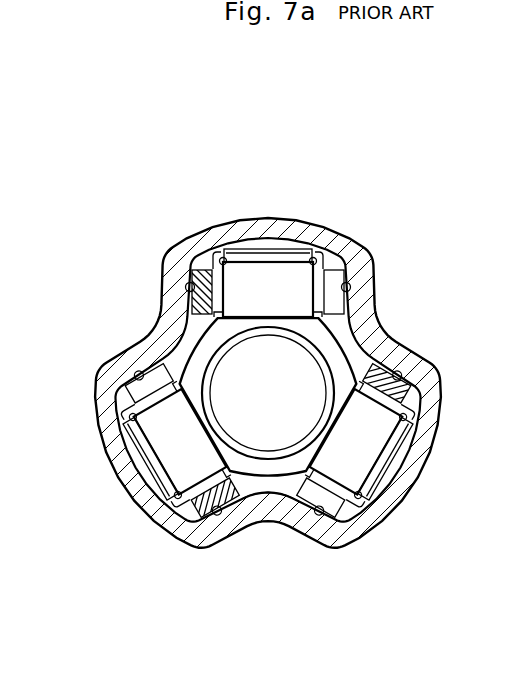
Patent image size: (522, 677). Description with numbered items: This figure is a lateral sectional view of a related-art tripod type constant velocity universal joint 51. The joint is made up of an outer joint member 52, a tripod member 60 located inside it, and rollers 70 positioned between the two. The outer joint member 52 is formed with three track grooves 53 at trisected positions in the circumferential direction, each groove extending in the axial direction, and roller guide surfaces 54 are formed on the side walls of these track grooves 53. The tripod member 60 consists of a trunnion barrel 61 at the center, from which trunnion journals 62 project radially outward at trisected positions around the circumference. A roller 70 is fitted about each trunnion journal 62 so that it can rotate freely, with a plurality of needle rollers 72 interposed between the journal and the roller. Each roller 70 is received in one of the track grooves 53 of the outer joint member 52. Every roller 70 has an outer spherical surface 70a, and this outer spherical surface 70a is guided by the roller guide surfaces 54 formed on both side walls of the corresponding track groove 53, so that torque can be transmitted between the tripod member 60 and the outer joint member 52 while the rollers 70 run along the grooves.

The tripod type constant velocity universal joint 51 is at (237, 188).
The outer joint member 52 is at (168, 252).
The track grooves 53 is at (204, 262).
The roller guide surfaces 54 is at (194, 300).
The tripod member 60 is at (187, 353).
The trunnion barrel 61 is at (267, 458).
The trunnion journals 62 is at (263, 272).
The rollers 70 is at (347, 282).
The outer spherical surface 70a is at (305, 517).
The needle rollers 72 is at (337, 248).